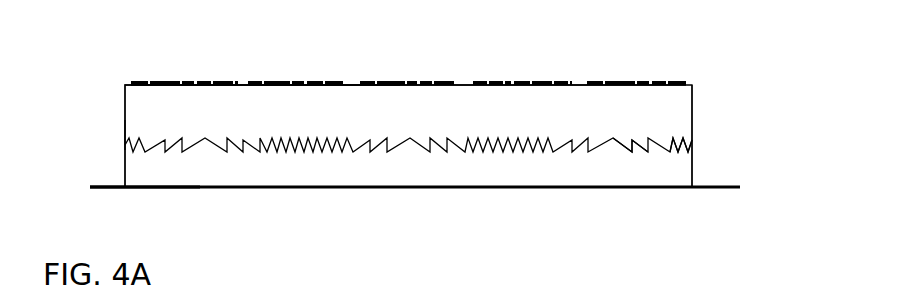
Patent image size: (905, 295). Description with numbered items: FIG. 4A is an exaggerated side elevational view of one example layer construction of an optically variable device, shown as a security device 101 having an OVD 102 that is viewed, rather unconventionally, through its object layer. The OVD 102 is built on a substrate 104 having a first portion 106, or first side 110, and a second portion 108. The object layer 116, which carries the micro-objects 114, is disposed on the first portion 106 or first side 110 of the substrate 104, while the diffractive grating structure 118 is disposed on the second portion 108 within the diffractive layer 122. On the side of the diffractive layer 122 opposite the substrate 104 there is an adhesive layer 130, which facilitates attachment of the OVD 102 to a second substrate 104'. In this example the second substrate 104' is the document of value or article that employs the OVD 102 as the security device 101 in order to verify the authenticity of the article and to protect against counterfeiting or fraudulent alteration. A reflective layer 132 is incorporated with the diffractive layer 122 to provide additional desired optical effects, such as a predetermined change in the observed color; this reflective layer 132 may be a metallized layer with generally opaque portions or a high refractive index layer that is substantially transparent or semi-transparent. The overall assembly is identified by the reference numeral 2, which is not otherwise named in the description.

The display device 2 is at (722, 205).
The security device 101 is at (424, 233).
The OVD 102 is at (636, 56).
The substrate 104 is at (225, 117).
The second substrate 104' is at (145, 214).
The first portion 106 is at (135, 59).
The second portion 108 is at (672, 137).
The first side 110 is at (703, 73).
The micro-objects 114 is at (198, 84).
The object layer 116 is at (350, 84).
The diffractive grating structure 118 is at (283, 141).
The diffractive layer 122 is at (115, 139).
The adhesive layer 130 is at (148, 178).
The reflective layer 132 is at (646, 129).